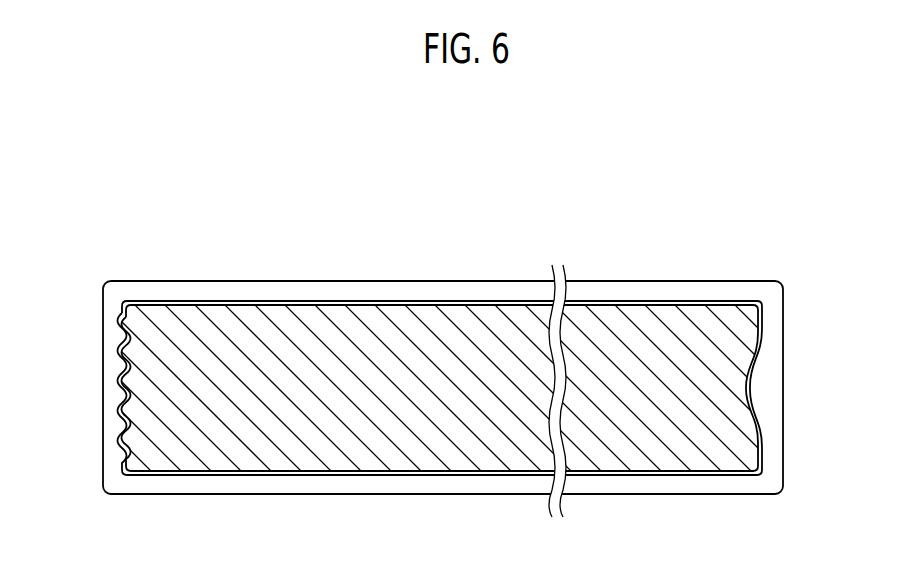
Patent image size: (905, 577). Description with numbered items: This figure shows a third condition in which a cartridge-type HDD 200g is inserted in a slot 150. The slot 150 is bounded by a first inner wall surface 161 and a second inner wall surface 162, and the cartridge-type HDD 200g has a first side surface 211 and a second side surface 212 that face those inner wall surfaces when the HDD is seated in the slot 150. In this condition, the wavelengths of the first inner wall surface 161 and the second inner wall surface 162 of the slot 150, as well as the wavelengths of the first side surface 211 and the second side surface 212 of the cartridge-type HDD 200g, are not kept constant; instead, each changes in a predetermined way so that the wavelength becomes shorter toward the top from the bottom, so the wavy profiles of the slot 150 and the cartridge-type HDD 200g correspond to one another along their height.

The slot 150 is at (439, 278).
The first inner wall surface 161 is at (118, 314).
The second inner wall surface 162 is at (765, 322).
The first side surface 211 is at (128, 343).
The second side surface 212 is at (755, 333).
The cartridge-type HDD 200g is at (409, 445).